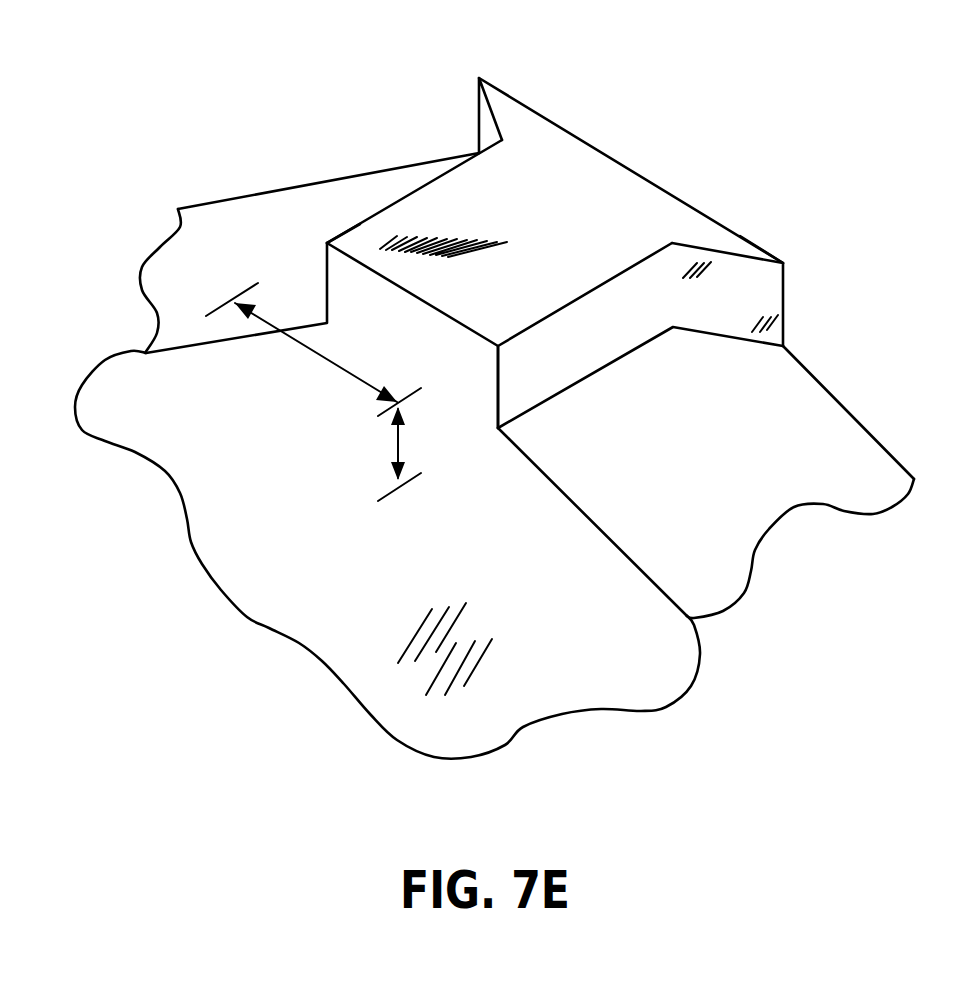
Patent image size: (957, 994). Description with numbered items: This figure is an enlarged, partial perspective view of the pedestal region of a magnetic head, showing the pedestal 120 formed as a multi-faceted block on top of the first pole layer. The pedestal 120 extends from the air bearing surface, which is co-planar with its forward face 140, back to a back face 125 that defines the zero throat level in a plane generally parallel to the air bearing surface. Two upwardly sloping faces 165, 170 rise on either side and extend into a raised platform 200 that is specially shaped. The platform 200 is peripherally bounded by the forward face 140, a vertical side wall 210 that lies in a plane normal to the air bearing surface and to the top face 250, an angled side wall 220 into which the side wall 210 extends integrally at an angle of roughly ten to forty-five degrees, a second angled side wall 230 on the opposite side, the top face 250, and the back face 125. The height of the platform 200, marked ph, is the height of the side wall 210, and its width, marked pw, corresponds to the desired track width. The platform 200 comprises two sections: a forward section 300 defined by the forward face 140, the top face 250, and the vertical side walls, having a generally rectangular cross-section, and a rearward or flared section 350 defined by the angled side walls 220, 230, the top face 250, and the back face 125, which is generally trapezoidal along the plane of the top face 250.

The pedestal 120 is at (333, 53).
The back face 125 is at (626, 163).
The forward face 140 is at (350, 532).
The sloping face 165 is at (281, 261).
The sloping face 170 is at (697, 437).
The raised platform 200 is at (570, 105).
The vertical side wall 210 is at (608, 351).
The angled side wall 220 is at (744, 311).
The angled side wall 230 is at (478, 120).
The top face 250 is at (549, 220).
The forward section 300 is at (343, 227).
The rearward section 350 is at (730, 218).